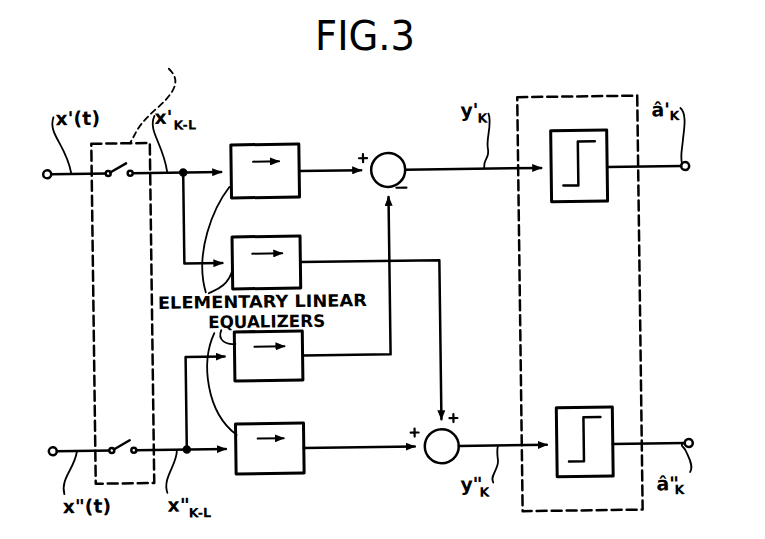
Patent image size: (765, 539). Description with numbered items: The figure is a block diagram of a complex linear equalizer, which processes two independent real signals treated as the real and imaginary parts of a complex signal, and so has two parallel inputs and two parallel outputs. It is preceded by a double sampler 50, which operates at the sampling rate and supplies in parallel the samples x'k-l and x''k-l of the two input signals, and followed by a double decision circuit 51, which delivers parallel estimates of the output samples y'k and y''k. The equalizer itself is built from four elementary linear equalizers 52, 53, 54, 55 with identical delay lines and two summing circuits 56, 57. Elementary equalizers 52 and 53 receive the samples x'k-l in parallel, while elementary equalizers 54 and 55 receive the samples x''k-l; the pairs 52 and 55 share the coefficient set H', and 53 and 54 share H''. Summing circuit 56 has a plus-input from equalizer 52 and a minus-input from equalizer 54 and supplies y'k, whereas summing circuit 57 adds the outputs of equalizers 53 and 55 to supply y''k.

The double sampler 50 is at (121, 332).
The double decision circuit 51 is at (602, 258).
The elementary linear equalizer 52 is at (291, 146).
The elementary linear equalizer 53 is at (288, 240).
The elementary linear equalizer 54 is at (302, 341).
The elementary linear equalizer 55 is at (284, 428).
The summing circuit 56 is at (392, 152).
The summing circuit 57 is at (427, 461).